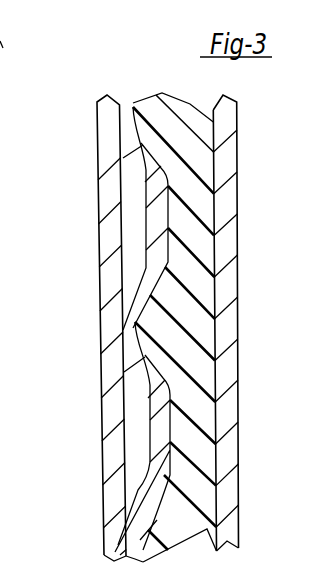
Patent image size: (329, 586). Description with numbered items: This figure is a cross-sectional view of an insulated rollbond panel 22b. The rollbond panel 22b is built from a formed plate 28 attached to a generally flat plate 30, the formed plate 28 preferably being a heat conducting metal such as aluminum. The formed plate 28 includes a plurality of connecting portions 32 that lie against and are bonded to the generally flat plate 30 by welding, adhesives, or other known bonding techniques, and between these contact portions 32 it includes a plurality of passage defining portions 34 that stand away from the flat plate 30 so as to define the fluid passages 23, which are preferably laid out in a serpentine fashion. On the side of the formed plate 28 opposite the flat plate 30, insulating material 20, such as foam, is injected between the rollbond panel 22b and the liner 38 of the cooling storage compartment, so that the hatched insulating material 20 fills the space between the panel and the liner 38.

The insulating material 20 is at (190, 297).
The rollbond panel 22b is at (85, 334).
The fluid passages 23 is at (130, 252).
The formed plate 28 is at (145, 419).
The generally flat plate 30 is at (110, 186).
The connecting portions 32 is at (127, 124).
The passage defining portions 34 is at (153, 227).
The liner 38 is at (225, 194).